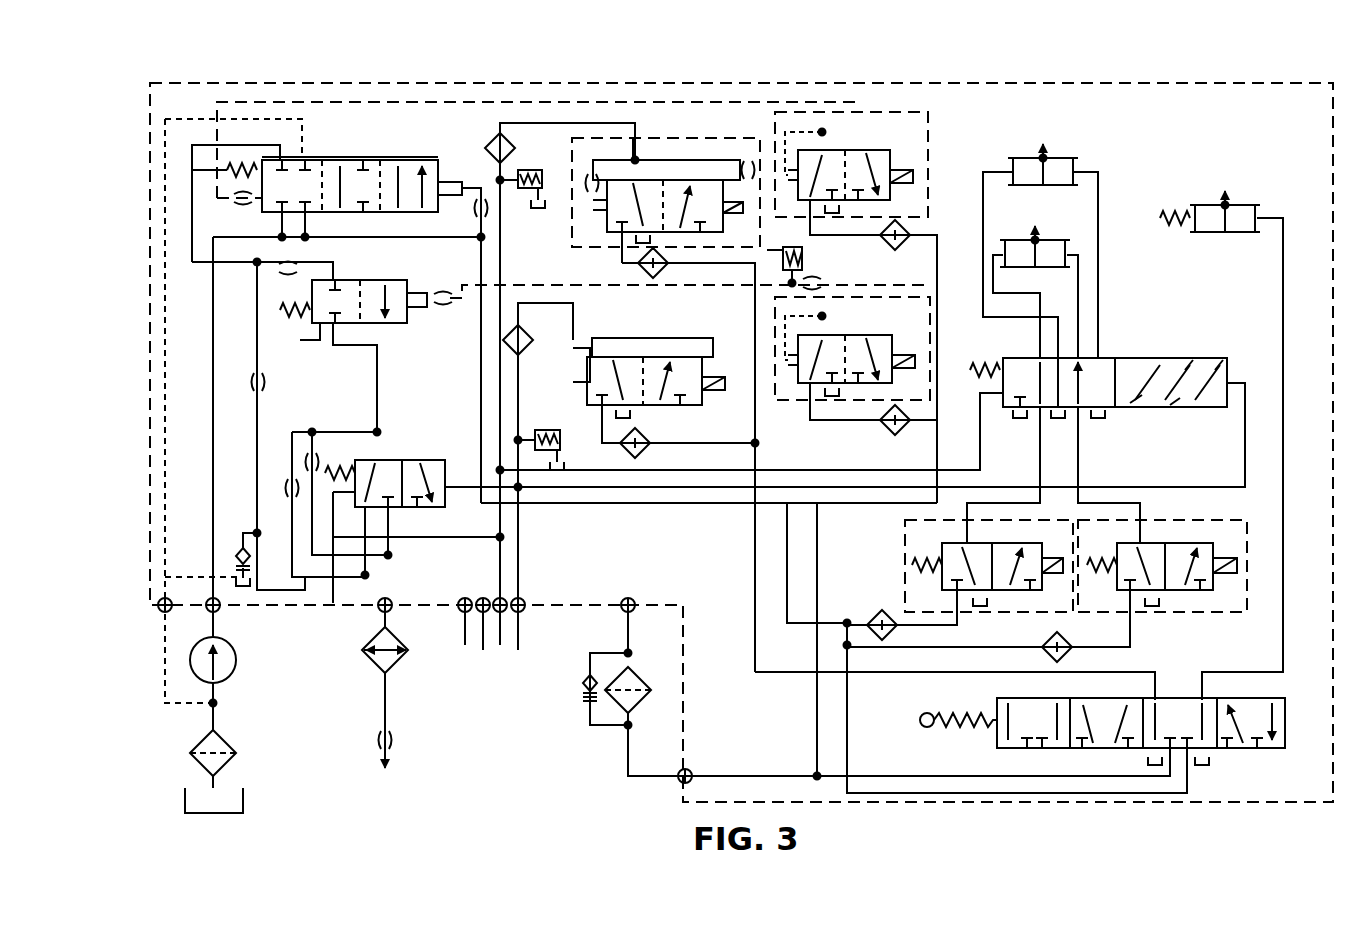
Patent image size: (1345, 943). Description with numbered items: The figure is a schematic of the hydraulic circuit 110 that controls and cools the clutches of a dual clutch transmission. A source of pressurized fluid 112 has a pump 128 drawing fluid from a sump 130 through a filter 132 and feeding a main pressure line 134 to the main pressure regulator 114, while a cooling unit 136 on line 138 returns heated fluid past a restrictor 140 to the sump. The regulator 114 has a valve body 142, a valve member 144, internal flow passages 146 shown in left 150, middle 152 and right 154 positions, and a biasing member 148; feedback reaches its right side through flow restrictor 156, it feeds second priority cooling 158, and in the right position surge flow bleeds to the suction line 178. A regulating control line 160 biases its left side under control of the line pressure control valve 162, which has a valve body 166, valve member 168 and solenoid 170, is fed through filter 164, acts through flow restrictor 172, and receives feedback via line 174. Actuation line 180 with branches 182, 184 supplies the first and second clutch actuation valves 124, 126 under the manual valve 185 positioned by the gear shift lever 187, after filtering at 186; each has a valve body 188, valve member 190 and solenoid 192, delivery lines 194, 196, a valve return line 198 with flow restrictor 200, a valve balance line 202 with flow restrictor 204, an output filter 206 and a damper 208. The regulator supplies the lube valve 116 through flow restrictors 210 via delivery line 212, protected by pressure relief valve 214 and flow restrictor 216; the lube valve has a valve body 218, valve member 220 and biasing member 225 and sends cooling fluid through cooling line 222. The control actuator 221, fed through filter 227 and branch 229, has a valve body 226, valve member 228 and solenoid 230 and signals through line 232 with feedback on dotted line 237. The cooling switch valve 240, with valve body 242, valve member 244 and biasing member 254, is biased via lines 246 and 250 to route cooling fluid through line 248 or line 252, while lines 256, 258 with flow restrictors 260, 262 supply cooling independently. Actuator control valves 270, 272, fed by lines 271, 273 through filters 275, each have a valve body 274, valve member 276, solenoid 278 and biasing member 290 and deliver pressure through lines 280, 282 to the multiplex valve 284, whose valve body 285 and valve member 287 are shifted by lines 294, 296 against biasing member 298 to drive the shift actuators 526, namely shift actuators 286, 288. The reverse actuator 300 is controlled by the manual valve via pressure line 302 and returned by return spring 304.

The hydraulic circuit 110 is at (615, 68).
The source of pressurized fluid 112 is at (140, 710).
The main pressure regulator 114 is at (377, 140).
The lube valve 116 is at (415, 290).
The first clutch actuation valve 124 is at (682, 142).
The second clutch actuation valve 126 is at (670, 335).
The pump 128 is at (245, 678).
The sump 130 is at (240, 810).
The filter 132 is at (195, 745).
The main pressure line 134 is at (215, 422).
The cooling unit 136 is at (392, 658).
The line 138 is at (213, 410).
The restrictor 140 is at (405, 748).
The valve body 142 is at (337, 145).
The valve member 144 is at (462, 177).
The internal flow passages 146 is at (287, 155).
The biasing member 148 is at (240, 160).
The left position 150 is at (272, 210).
The middle position 152 is at (358, 215).
The right position 154 is at (425, 162).
The flow restrictor 156 is at (495, 214).
The second priority cooling 158 is at (190, 205).
The regulating control line 160 is at (470, 100).
The line pressure control valve 162 is at (933, 113).
The filter 164 is at (912, 235).
The valve body 166 is at (847, 150).
The valve member 168 is at (900, 138).
The solenoid 170 is at (910, 175).
The flow restrictor 172 is at (743, 100).
The line 174 is at (822, 132).
The suction line 178 is at (165, 485).
The actuation line 180 is at (755, 578).
The branch 182 is at (690, 263).
The branch 184 is at (655, 445).
The manual valve 185 is at (1245, 755).
The filter 186 is at (640, 263).
The gear shift lever 187 is at (925, 712).
The valve body 188 is at (665, 162).
The valve member 190 is at (600, 218).
The solenoid 192 is at (725, 397).
The delivery line 194 is at (490, 215).
The delivery line 196 is at (540, 470).
The valve return line 198 is at (590, 160).
The flow restrictor 200 is at (575, 180).
The valve balance line 202 is at (730, 155).
The flow restrictor 204 is at (760, 167).
The output filter 206 is at (500, 143).
The damper 208 is at (548, 428).
The flow restrictor 210 is at (250, 264).
The delivery line 212 is at (347, 265).
The pressure relief valve 214 is at (243, 527).
The flow restrictor 216 is at (245, 378).
The valve body 218 is at (320, 333).
The valve member 220 is at (375, 325).
The control actuator 221 is at (880, 313).
The cooling line 222 is at (377, 394).
The biasing member 225 is at (280, 310).
The valve body 226 is at (860, 335).
The filter 227 is at (875, 445).
The valve member 228 is at (897, 308).
The branch 229 is at (752, 438).
The solenoid 230 is at (912, 340).
The line 232 is at (493, 340).
The dotted line 237 is at (765, 323).
The cooling switch valve 240 is at (415, 448).
The valve body 242 is at (390, 522).
The valve member 244 is at (415, 507).
The line 246 is at (480, 483).
The line 248 is at (483, 646).
The line 250 is at (503, 510).
The line 252 is at (500, 648).
The biasing member 254 is at (335, 468).
The line 256 is at (305, 600).
The line 258 is at (335, 610).
The flow restrictor 260 is at (280, 484).
The flow restrictor 262 is at (305, 463).
The actuator control valve 270 is at (910, 523).
The line 271 is at (767, 622).
The actuator control valve 272 is at (1240, 520).
The line 273 is at (1113, 635).
The valve body 274 is at (1145, 540).
The filter 275 is at (1035, 640).
The valve member 276 is at (1015, 540).
The solenoid 278 is at (1215, 540).
The line 280 is at (1025, 443).
The line 282 is at (1080, 455).
The multiplex valve 284 is at (1125, 358).
The valve body 285 is at (1185, 360).
The shift actuator 286 is at (1067, 148).
The valve member 287 is at (1235, 415).
The shift actuator 288 is at (1045, 243).
The biasing member 290 is at (1100, 533).
The line 294 is at (877, 448).
The line 296 is at (1245, 383).
The biasing member 298 is at (967, 360).
The actuator 300 is at (1235, 202).
The pressure line 302 is at (1283, 323).
The return spring 304 is at (1165, 227).
The shift actuators 526 is at (1205, 165).